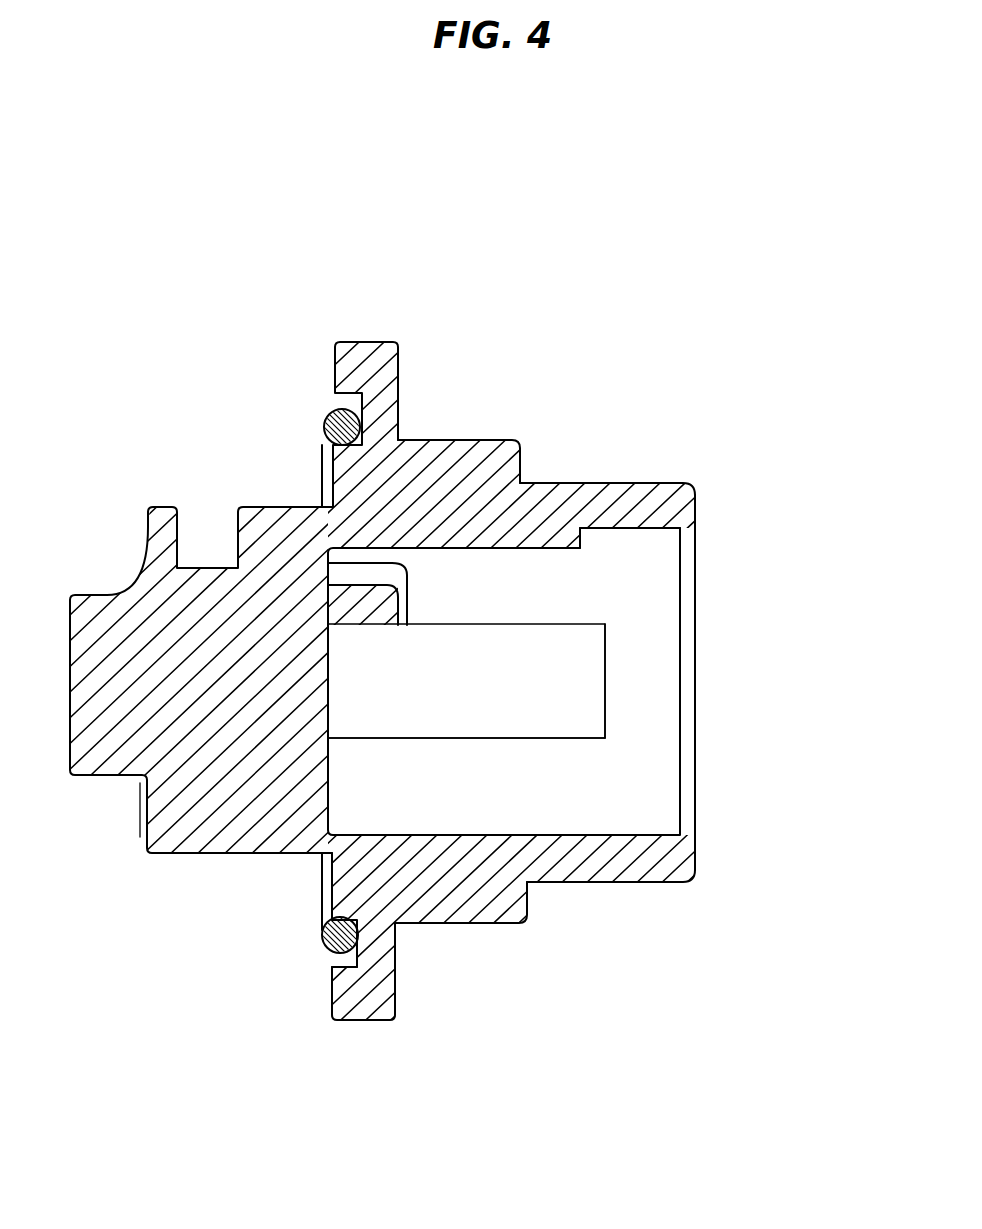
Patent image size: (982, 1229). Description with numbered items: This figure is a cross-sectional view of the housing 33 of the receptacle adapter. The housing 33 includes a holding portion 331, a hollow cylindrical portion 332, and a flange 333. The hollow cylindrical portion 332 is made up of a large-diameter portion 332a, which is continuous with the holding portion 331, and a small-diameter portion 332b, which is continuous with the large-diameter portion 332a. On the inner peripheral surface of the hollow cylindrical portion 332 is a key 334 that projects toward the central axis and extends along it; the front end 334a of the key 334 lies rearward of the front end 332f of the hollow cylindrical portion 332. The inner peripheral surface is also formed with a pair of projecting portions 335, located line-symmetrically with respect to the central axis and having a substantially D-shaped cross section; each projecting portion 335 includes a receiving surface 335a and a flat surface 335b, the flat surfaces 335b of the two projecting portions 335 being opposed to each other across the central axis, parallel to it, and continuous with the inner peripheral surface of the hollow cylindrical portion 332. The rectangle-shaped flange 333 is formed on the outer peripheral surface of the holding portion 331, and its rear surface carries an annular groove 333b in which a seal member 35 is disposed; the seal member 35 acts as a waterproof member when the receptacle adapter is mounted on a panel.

The housing 33 is at (665, 480).
The holding portion 331 is at (270, 515).
The hollow cylindrical portion 332 is at (482, 327).
The large-diameter portion 332a is at (480, 448).
The small-diameter portion 332b is at (622, 483).
The front end 332f is at (694, 860).
The flange 333 is at (373, 347).
The annular groove 333b is at (328, 963).
The key 334 is at (517, 540).
The front end 334a is at (582, 540).
The projecting portion 335 is at (562, 677).
The receiving surface 335a is at (605, 685).
The flat surface 335b is at (515, 705).
The seal member 35 is at (327, 940).